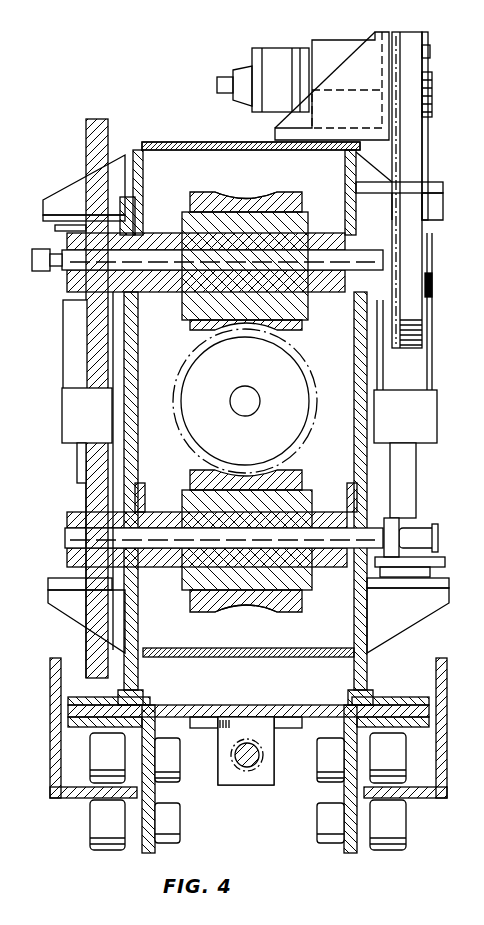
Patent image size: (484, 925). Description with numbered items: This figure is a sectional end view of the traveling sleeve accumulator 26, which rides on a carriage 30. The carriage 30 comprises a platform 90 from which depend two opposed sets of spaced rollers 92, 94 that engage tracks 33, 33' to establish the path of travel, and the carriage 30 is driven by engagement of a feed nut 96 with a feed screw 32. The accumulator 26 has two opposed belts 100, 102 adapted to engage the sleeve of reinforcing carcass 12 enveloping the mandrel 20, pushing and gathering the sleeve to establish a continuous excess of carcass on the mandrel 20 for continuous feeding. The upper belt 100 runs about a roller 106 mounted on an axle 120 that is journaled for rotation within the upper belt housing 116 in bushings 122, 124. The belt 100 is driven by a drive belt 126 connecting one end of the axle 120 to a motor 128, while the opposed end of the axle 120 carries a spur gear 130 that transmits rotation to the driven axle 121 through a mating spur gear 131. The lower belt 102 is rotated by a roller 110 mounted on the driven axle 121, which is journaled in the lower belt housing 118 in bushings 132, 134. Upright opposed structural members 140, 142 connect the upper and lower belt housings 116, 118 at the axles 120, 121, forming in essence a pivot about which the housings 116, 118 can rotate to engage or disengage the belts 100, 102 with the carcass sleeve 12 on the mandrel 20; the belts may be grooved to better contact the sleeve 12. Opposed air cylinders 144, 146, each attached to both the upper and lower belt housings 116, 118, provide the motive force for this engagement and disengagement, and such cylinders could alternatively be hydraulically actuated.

The reinforcing carcass 12 is at (190, 362).
The mandrel 20 is at (287, 402).
The traveling sleeve accumulator 26 is at (174, 138).
The carriage 30 is at (250, 702).
The feed screw 32 is at (260, 760).
The track 33 is at (69, 728).
The track 33' is at (423, 728).
The platform 90 is at (183, 704).
The rollers 92 is at (100, 776).
The rollers 94 is at (395, 780).
The feed nut 96 is at (255, 786).
The belt 100 is at (246, 192).
The belt 102 is at (246, 606).
The roller 106 is at (186, 222).
The roller 110 is at (300, 568).
The upper belt housing 116 is at (211, 141).
The lower belt housing 118 is at (334, 658).
The axle 120 is at (315, 268).
The driven axle 121 is at (80, 537).
The bushing 122 is at (170, 293).
The bushing 124 is at (330, 240).
The drive belt 126 is at (416, 140).
The motor 128 is at (250, 68).
The spur gear 130 is at (88, 135).
The spur gear 131 is at (97, 479).
The bushing 132 is at (150, 517).
The bushing 134 is at (333, 512).
The upright structural member 140 is at (138, 437).
The upright structural member 142 is at (354, 349).
The air cylinder 144 is at (63, 345).
The air cylinder 146 is at (430, 356).